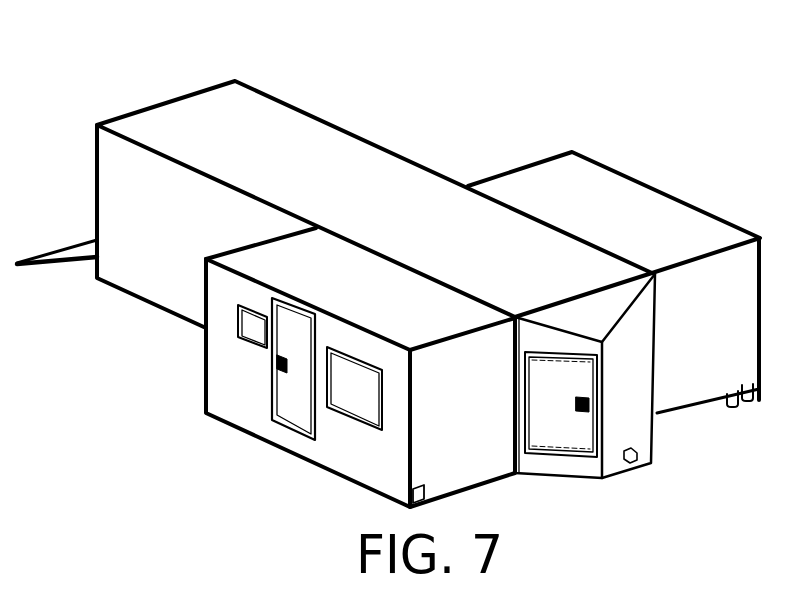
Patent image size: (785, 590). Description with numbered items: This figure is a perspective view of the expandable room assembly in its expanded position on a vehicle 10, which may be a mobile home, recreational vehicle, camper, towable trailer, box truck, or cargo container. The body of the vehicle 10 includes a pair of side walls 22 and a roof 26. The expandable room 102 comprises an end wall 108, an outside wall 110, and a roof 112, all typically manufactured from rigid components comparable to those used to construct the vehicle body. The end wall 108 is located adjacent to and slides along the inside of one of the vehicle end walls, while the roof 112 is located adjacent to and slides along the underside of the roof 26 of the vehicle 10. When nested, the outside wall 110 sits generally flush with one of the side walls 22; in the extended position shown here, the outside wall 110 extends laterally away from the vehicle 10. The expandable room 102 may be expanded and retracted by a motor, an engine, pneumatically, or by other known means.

The vehicle 10 is at (388, 244).
The side wall 22 is at (164, 232).
The roof 26 is at (330, 180).
The expandable room 102 is at (318, 367).
The end wall 108 is at (482, 419).
The outside wall 110 is at (387, 460).
The roof 112 is at (372, 299).